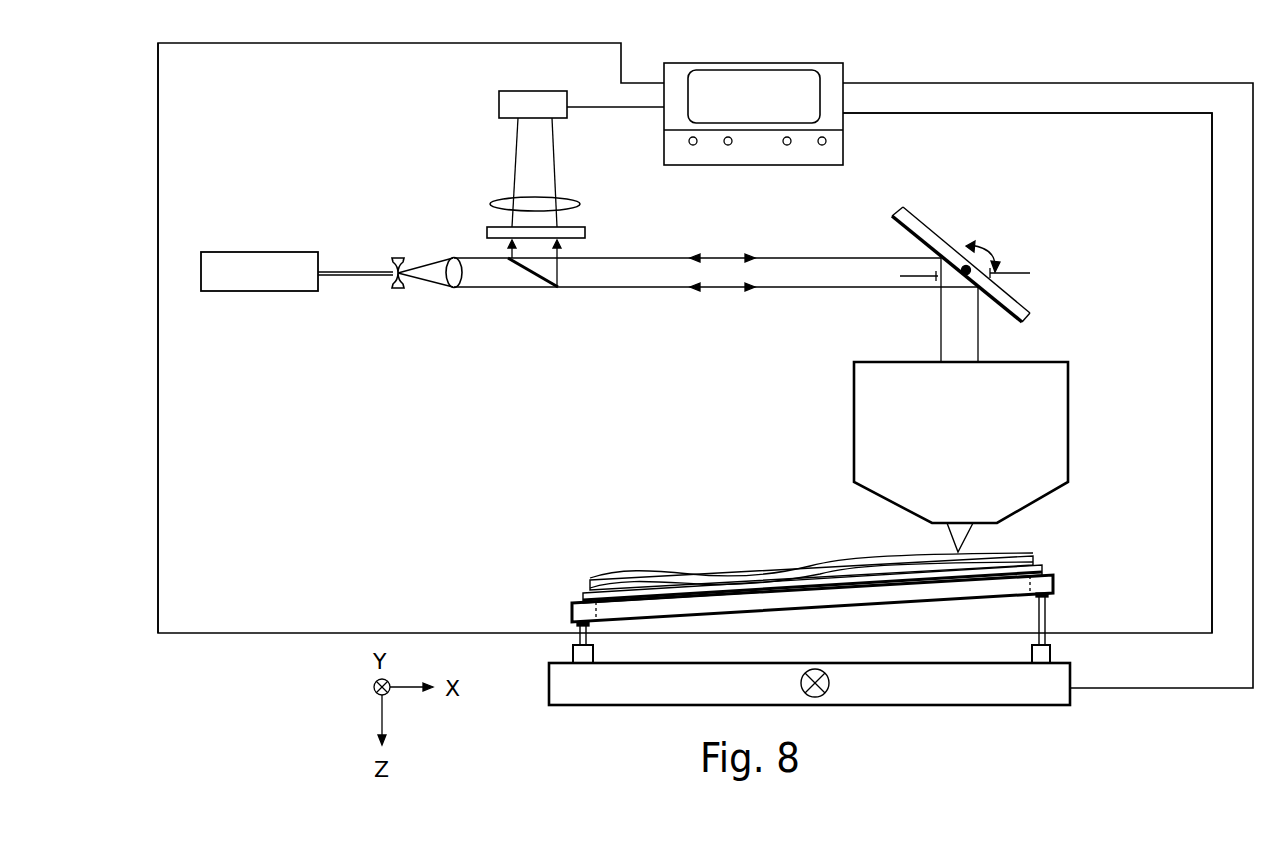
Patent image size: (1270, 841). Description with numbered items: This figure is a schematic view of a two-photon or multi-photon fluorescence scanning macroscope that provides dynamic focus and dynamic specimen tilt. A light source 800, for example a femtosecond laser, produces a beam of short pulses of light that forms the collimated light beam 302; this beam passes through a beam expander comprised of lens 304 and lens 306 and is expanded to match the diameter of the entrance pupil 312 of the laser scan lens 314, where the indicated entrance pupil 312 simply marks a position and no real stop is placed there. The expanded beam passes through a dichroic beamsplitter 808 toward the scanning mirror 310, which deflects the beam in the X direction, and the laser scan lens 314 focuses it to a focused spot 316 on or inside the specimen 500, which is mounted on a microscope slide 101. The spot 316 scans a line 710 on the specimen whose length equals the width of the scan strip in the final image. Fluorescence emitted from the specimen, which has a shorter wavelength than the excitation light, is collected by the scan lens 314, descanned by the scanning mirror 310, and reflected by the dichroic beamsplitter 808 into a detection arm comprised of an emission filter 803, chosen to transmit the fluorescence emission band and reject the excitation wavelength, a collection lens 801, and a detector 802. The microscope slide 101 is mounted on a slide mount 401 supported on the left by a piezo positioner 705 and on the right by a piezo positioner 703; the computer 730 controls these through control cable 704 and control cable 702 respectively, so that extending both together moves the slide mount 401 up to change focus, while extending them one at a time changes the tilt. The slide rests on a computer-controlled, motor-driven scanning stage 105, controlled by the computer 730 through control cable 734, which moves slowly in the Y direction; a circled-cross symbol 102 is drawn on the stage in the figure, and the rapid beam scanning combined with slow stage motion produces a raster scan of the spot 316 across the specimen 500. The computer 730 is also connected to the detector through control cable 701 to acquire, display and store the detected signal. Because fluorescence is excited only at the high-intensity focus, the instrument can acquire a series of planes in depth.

The microscope slide 101 is at (1035, 565).
The rotation axis 102 is at (815, 698).
The scanning stage 105 is at (1030, 705).
The incoming collimated light beam 302 is at (348, 270).
The lens 304 is at (390, 290).
The lens 306 is at (447, 290).
The scanning mirror 310 is at (945, 240).
The entrance pupil 312 is at (1023, 272).
The laser scan lens 314 is at (1068, 428).
The focused spot 316 is at (958, 550).
The slide mount 401 is at (1055, 580).
The specimen 500 is at (1022, 556).
The control cable 701 is at (585, 108).
The control cable 702 is at (1060, 117).
The piezo positioner 703 is at (1045, 648).
The control cable 704 is at (158, 555).
The piezo positioner 705 is at (575, 655).
The line 710 is at (945, 552).
The computer 730 is at (757, 62).
The control cable 734 is at (933, 83).
The light source 800 is at (230, 252).
The collection lens 801 is at (497, 203).
The detector 802 is at (499, 103).
The emission filter 803 is at (488, 232).
The dichroic beamsplitter 808 is at (553, 290).